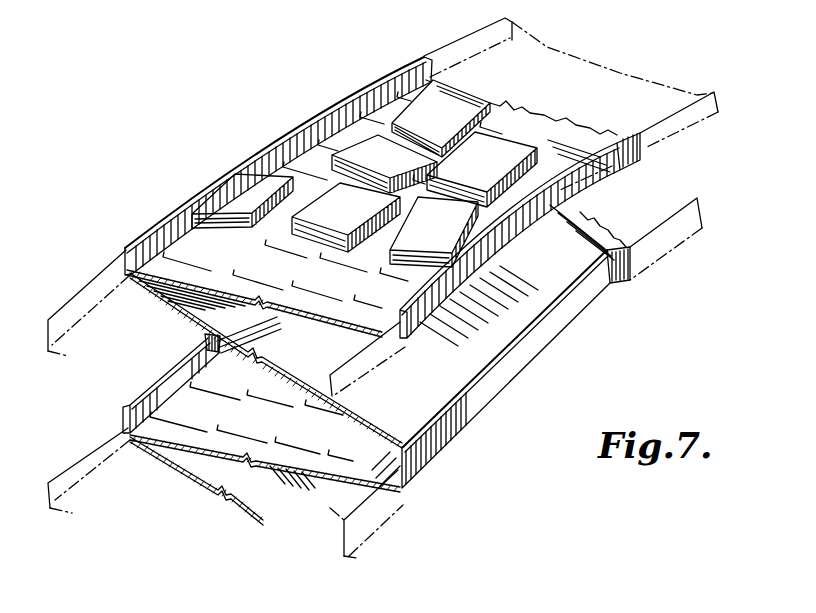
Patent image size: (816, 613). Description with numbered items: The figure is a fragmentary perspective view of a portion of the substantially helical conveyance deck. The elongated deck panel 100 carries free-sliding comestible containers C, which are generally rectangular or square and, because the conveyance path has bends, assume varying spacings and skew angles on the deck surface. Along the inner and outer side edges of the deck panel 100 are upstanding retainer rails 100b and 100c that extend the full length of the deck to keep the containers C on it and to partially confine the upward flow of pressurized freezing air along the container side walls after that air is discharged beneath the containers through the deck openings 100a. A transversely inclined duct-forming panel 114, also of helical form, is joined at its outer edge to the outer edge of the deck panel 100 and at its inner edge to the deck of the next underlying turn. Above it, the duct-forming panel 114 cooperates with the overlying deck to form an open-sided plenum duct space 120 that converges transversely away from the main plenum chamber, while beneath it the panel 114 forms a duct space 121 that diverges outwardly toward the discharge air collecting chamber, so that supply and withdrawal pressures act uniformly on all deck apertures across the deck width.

The deck panel 100 is at (363, 448).
The deck openings 100a is at (190, 263).
The upstanding retainer rail 100b is at (622, 170).
The upstanding retainer rail 100c is at (290, 137).
The duct-forming panel 114 is at (544, 294).
The plenum duct space 120 is at (340, 353).
The duct space 121 is at (384, 108).
The comestible containers C is at (485, 152).